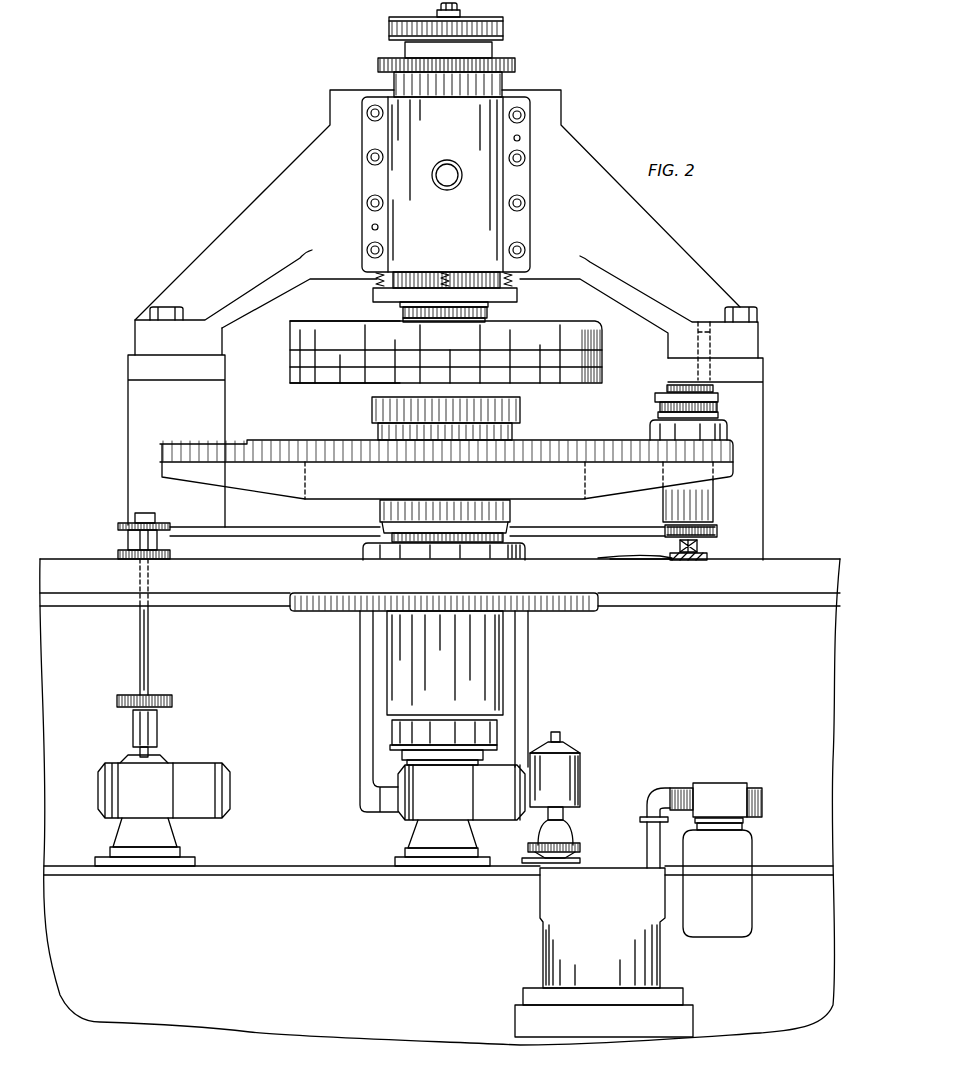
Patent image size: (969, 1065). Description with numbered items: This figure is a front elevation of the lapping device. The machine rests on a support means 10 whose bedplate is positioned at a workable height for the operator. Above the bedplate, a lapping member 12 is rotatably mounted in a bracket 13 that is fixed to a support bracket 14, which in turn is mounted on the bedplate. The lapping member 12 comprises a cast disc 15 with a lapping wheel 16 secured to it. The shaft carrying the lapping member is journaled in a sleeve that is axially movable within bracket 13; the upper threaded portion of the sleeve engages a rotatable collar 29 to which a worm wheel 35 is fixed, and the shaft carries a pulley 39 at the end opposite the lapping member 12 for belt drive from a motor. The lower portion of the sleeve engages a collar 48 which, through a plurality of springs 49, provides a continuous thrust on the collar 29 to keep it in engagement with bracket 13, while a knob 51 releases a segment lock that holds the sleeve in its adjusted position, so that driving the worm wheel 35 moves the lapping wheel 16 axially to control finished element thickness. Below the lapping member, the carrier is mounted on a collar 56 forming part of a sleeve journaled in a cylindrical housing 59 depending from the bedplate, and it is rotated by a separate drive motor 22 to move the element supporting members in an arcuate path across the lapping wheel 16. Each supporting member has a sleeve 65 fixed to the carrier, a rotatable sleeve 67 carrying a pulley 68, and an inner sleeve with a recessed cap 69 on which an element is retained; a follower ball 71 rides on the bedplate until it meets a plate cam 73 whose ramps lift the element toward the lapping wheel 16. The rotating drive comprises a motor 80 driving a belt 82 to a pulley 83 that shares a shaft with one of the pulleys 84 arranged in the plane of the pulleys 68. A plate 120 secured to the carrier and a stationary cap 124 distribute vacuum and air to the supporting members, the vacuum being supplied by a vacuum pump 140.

The support means 10 is at (58, 572).
The lapping member 12 is at (528, 322).
The bracket 13 is at (523, 183).
The support bracket 14 is at (252, 202).
The cast disc 15 is at (318, 325).
The lapping wheel 16 is at (295, 383).
The drive motor 22 is at (398, 810).
The rotatable collar 29 is at (393, 81).
The worm wheel 35 is at (517, 65).
The pulley 39 is at (503, 30).
The collar 48 is at (373, 295).
The springs 49 is at (517, 278).
The knob 51 is at (436, 181).
The collar 56 is at (512, 508).
The cylindrical housing 59 is at (363, 552).
The sleeve 65 is at (713, 492).
The rotatable sleeve 67 is at (727, 432).
The pulley 68 is at (717, 531).
The recessed cap 69 is at (713, 389).
The ball 71 is at (688, 556).
The plate cam 73 is at (633, 553).
The motor 80 is at (196, 768).
The belt 82 is at (258, 527).
The pulley 83 is at (158, 695).
The pulleys 84 is at (120, 529).
The plate 120 is at (378, 432).
The stationary cap 124 is at (520, 402).
The vacuum pump 140 is at (555, 922).